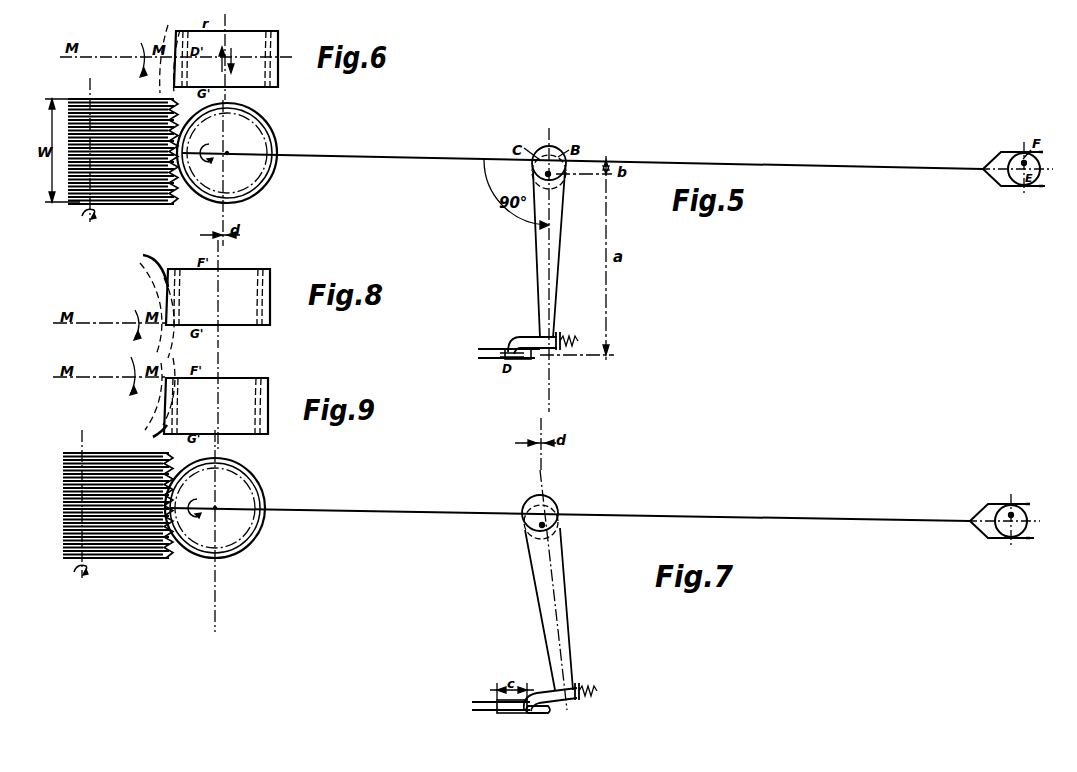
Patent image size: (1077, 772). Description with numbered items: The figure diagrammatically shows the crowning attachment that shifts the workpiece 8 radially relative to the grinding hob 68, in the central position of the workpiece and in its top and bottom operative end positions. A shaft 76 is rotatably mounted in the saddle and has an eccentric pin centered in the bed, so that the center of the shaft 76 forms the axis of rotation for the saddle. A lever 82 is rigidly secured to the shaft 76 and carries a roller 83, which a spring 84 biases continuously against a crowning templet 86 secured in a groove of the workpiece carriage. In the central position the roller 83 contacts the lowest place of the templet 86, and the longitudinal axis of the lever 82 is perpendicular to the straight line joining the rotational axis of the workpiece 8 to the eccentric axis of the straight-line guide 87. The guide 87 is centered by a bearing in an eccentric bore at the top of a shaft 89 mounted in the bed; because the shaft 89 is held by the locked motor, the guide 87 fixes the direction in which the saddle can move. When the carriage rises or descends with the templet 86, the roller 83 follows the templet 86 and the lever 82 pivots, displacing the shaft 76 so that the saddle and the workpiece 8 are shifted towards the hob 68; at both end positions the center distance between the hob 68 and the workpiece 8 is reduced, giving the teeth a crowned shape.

In FIG. 6, the workpiece 8 is at (243, 200).
In FIG. 6, the grinding hob 68 is at (128, 205).
In FIG. 5, the shaft 76 is at (560, 176).
In FIG. 5, the lever 82 is at (558, 262).
In FIG. 5, the roller 83 is at (525, 362).
In FIG. 5, the spring 84 is at (567, 338).
In FIG. 5, the crowning templet 86 is at (492, 360).
In FIG. 5, the straight-line guide 87 is at (1042, 192).
In FIG. 5, the shaft 89 is at (1017, 187).